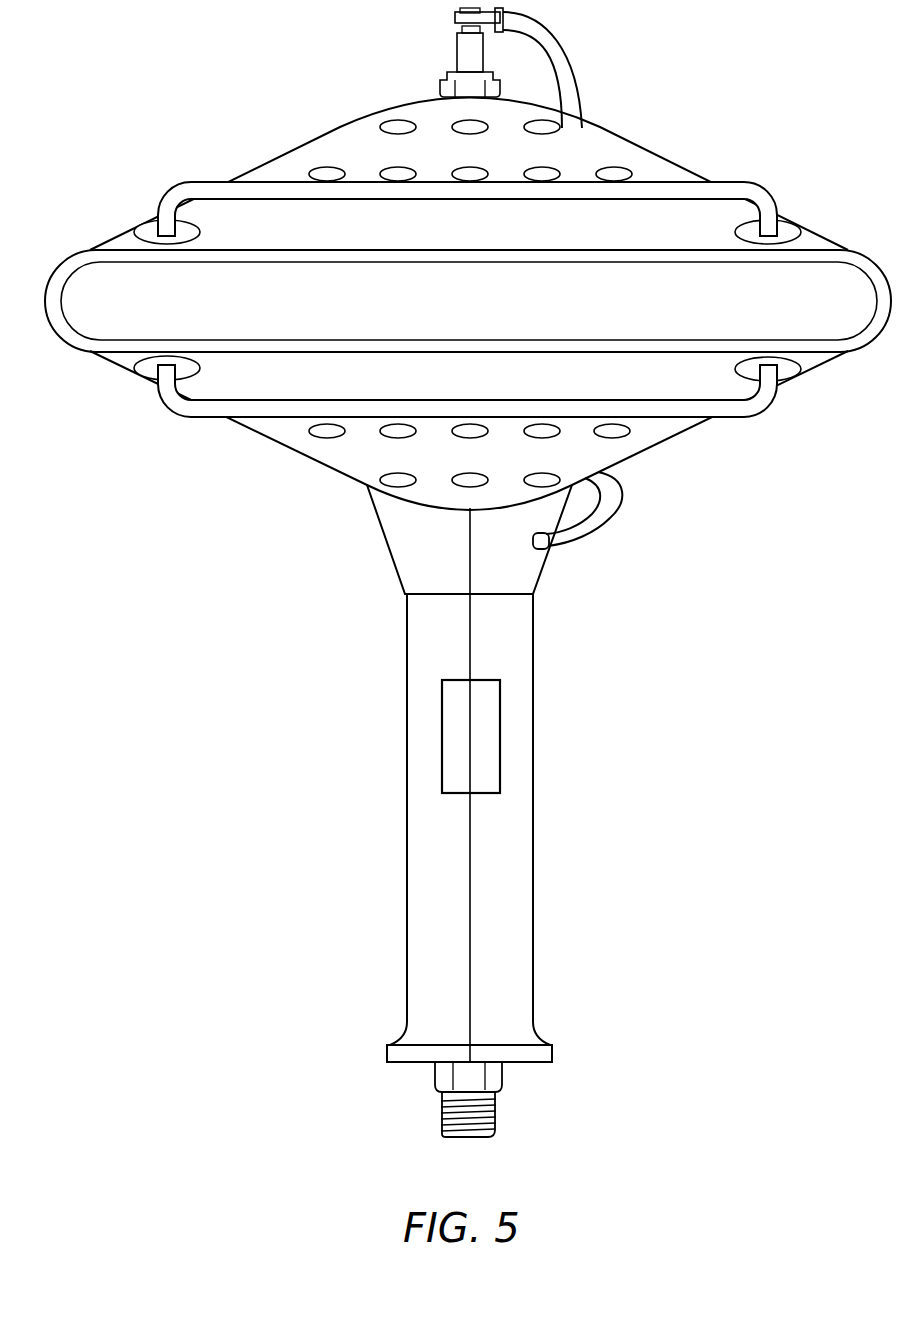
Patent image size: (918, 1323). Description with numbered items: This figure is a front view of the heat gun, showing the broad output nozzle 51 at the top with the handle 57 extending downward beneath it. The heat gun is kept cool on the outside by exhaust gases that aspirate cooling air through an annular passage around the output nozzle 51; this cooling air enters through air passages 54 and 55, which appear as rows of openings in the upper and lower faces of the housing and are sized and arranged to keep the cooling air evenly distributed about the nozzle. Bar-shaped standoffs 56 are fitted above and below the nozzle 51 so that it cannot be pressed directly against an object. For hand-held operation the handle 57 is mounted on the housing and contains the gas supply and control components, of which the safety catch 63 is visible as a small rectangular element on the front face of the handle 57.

The output nozzle 51 is at (486, 312).
The air passage 54 is at (398, 127).
The air passage 55 is at (325, 170).
The standoff 56 is at (728, 195).
The handle 57 is at (425, 902).
The safety catch 63 is at (458, 733).